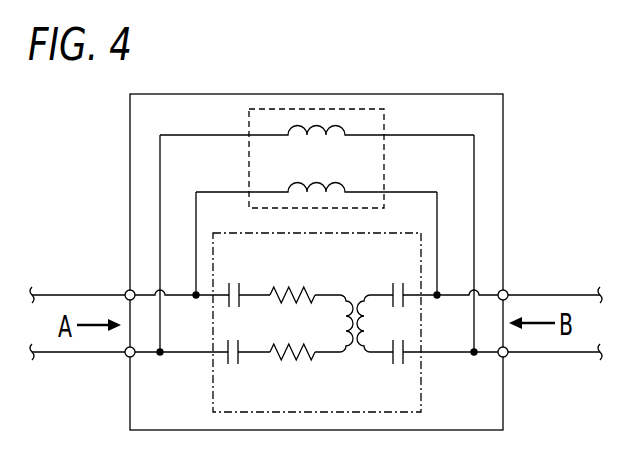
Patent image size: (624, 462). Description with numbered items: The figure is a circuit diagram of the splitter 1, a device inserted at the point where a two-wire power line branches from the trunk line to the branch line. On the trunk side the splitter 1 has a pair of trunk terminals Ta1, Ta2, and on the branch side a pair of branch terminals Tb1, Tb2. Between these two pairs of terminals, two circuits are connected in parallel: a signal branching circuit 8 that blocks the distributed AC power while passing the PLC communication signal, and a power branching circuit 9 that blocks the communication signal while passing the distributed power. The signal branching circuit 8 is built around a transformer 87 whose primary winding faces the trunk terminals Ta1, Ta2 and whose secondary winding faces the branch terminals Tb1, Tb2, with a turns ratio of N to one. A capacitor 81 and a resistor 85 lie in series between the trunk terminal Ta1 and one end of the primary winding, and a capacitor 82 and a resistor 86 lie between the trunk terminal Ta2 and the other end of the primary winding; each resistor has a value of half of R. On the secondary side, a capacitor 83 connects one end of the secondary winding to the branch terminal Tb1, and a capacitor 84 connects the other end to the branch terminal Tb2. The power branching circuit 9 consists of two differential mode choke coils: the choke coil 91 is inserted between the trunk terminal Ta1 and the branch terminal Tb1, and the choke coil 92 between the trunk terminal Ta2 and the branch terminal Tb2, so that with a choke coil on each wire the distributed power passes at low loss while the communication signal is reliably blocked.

The splitter 1 is at (504, 117).
The signal branching circuit 8 is at (337, 322).
The capacitor 81 is at (233, 286).
The capacitor 82 is at (235, 364).
The capacitor 83 is at (395, 283).
The capacitor 84 is at (396, 364).
The resistor 85 is at (294, 286).
The resistor 86 is at (308, 362).
The transformer 87 is at (352, 300).
The power branching circuit 9 is at (317, 158).
The choke coil 91 is at (296, 184).
The choke coil 92 is at (338, 138).
The trunk terminal Ta1 is at (126, 291).
The trunk terminal Ta2 is at (126, 356).
The branch terminal Tb1 is at (507, 291).
The branch terminal Tb2 is at (507, 357).